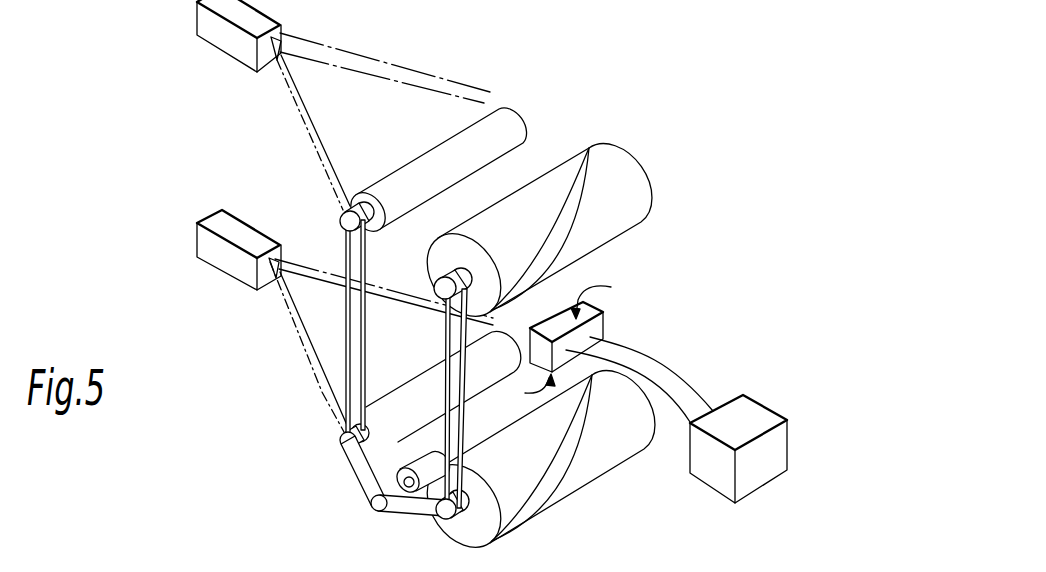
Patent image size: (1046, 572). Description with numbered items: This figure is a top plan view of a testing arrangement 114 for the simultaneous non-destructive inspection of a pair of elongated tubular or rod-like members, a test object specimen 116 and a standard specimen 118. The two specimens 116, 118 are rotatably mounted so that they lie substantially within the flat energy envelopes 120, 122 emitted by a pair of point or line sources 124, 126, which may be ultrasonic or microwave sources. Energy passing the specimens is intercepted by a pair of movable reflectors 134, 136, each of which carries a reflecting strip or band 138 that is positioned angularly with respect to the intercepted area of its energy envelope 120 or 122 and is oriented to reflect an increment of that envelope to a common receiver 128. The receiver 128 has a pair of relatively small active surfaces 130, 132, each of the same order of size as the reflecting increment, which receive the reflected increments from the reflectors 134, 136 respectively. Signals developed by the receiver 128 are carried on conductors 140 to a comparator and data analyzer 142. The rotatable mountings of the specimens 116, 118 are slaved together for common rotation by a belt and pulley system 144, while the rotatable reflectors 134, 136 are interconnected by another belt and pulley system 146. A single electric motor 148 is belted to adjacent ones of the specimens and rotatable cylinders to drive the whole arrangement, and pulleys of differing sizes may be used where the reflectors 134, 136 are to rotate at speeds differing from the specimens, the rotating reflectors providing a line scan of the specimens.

The testing arrangement 114 is at (578, 116).
The specimen 116 is at (407, 170).
The specimen 118 is at (425, 383).
The energy envelope 120 is at (317, 153).
The energy envelope 122 is at (312, 373).
The source 124 is at (207, 44).
The source 126 is at (210, 268).
The receiver 128 is at (594, 327).
The active surface 130 is at (605, 297).
The active surface 132 is at (526, 389).
The movable reflector 134 is at (620, 153).
The movable reflector 136 is at (563, 500).
The reflecting strip 138 is at (566, 207).
The conductors 140 is at (673, 378).
The comparator and data analyzer 142 is at (752, 404).
The belt and pulley system 144 is at (348, 314).
The belt and pulley system 146 is at (446, 324).
The electric motor 148 is at (426, 460).